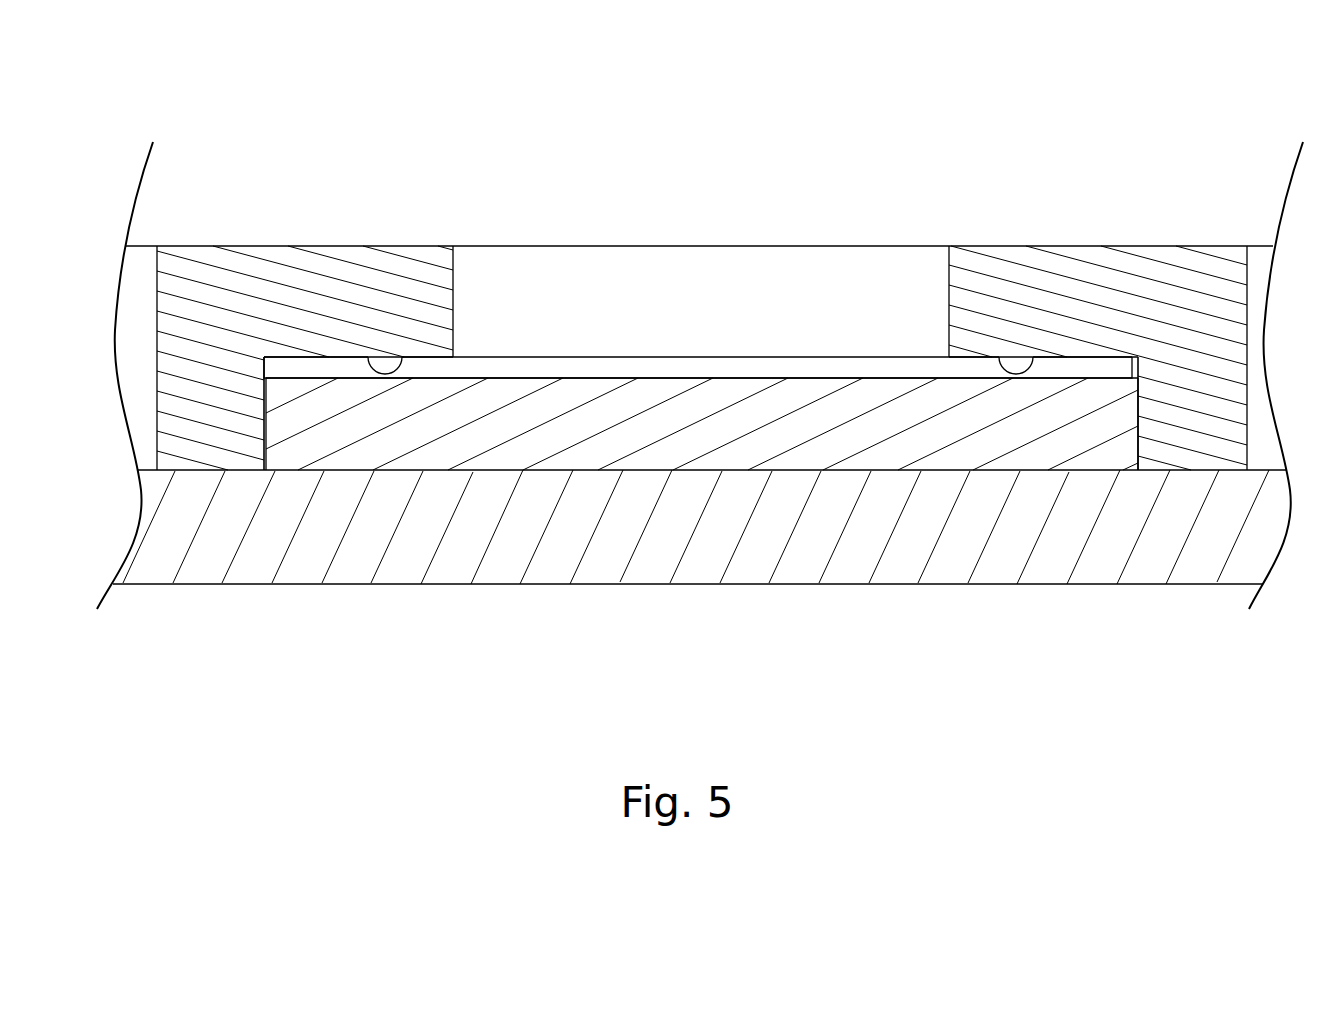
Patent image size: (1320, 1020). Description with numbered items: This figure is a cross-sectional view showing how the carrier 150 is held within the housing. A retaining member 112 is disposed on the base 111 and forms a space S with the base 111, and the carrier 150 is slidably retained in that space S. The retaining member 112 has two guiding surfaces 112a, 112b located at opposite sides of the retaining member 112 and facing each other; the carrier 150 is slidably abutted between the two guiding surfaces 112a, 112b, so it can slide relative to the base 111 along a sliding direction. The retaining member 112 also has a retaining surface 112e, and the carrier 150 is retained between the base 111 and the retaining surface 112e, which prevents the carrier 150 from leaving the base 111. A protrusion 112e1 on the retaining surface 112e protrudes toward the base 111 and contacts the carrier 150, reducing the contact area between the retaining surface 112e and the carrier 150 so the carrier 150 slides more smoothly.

The base 111 is at (460, 552).
The retaining member 112 is at (317, 263).
The guiding surface 112a is at (266, 425).
The guiding surface 112b is at (1137, 423).
The retaining surface 112e is at (442, 357).
The protrusion 112e1 is at (387, 365).
The carrier 150 is at (820, 417).
The space S is at (694, 348).